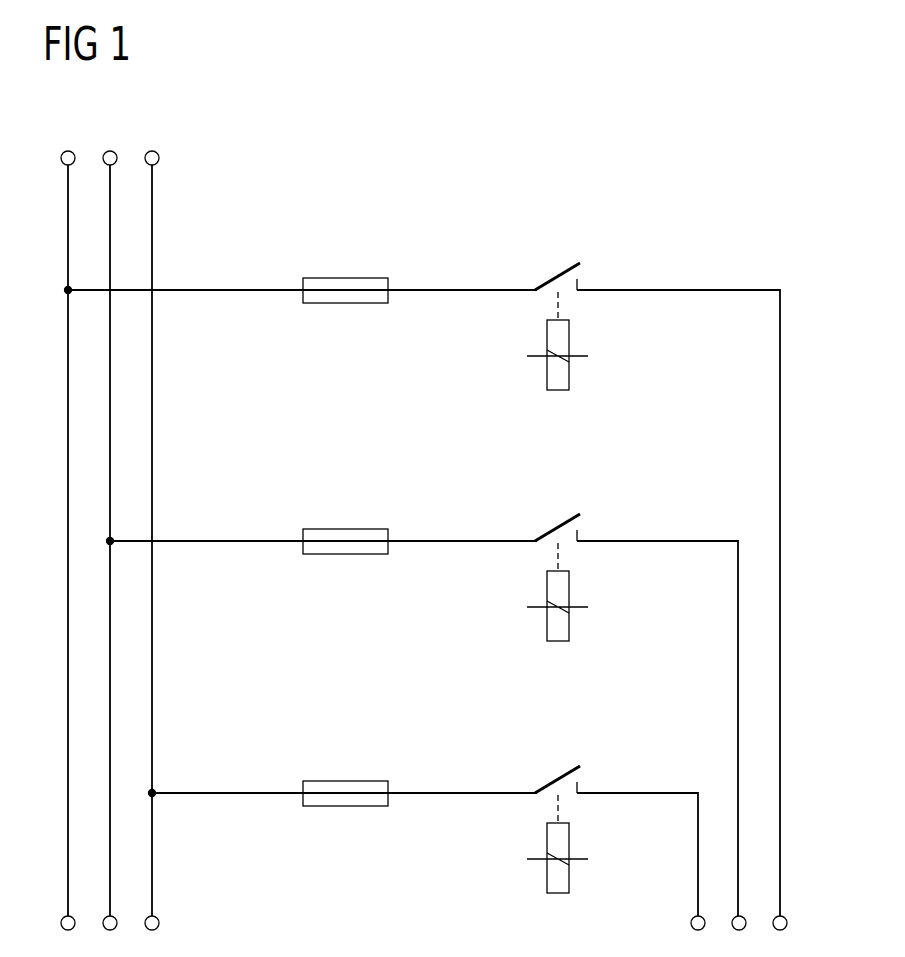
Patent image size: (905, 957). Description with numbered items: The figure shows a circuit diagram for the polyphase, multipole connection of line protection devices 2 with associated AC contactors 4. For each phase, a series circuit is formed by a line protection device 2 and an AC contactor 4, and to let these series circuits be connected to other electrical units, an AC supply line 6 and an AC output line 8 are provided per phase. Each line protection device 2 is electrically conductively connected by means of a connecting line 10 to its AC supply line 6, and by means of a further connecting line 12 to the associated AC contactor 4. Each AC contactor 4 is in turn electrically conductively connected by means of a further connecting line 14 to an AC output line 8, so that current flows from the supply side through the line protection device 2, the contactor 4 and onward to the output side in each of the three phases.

The line protection device 2 is at (345, 278).
The AC contactor 4 is at (566, 272).
The AC supply line 6 is at (152, 253).
The AC output line 8 is at (698, 877).
The connecting line 10 is at (211, 290).
The further connecting line 12 is at (445, 292).
The further connecting line 14 is at (676, 290).